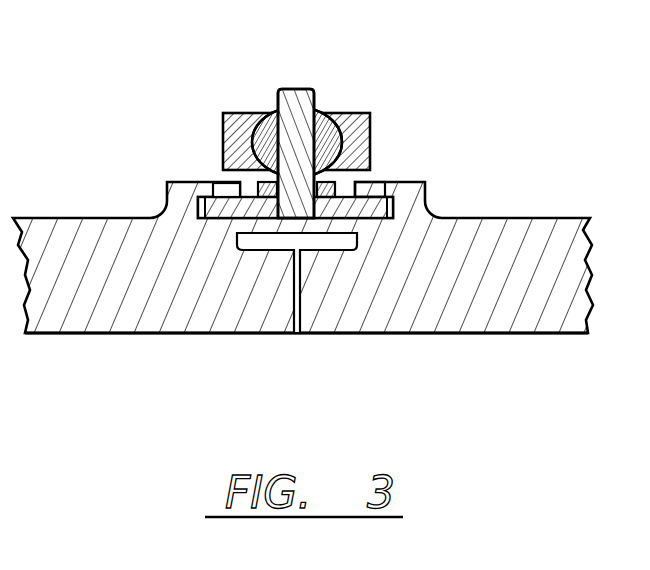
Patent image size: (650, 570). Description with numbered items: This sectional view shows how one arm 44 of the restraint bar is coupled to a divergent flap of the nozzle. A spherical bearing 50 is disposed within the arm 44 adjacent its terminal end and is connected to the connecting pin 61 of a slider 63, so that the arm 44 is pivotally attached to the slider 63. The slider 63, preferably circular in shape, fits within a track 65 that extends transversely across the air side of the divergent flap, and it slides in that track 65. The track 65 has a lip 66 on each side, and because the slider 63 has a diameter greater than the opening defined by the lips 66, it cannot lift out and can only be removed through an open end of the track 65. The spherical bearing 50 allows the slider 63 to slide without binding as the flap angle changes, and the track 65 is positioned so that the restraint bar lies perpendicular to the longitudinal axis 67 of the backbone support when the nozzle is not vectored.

The arm 44 is at (370, 127).
The spherical bearing 50 is at (335, 117).
The connecting pin 61 is at (298, 92).
The slider 63 is at (387, 220).
The track 65 is at (423, 200).
The lip 66 is at (223, 187).
The longitudinal axis 67 is at (294, 252).